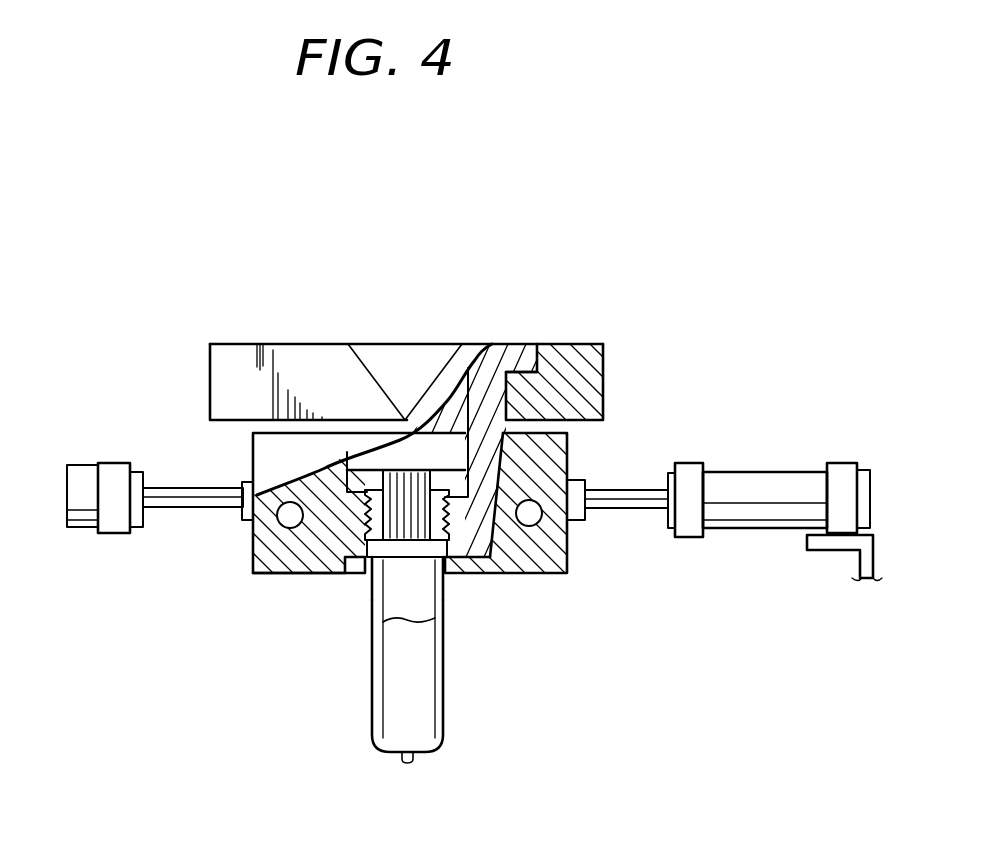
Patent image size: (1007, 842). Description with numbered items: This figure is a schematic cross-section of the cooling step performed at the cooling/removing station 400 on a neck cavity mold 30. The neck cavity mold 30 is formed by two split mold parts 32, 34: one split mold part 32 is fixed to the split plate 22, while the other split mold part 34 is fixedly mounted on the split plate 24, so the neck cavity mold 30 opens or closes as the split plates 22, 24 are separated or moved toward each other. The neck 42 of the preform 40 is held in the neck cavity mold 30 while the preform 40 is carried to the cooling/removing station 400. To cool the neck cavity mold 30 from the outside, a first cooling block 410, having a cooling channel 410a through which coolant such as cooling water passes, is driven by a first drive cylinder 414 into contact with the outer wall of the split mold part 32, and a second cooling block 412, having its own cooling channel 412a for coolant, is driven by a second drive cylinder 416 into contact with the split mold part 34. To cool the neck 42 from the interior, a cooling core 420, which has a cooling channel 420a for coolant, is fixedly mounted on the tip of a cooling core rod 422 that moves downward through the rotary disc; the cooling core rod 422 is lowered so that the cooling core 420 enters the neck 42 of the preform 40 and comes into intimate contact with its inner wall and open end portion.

The cooling/removing station 400 is at (716, 198).
The split plate 22 is at (605, 352).
The split plate 24 is at (220, 380).
The neck cavity mold 30 is at (500, 360).
The split mold part 32 is at (555, 452).
The split mold part 34 is at (318, 471).
The preform 40 is at (425, 705).
The neck 42 is at (478, 548).
The first cooling block 410 is at (548, 573).
The cooling channel 410a is at (532, 505).
The second cooling block 412 is at (253, 560).
The cooling channel 412a is at (285, 573).
The first drive cylinder 414 is at (770, 473).
The second drive cylinder 416 is at (88, 540).
The cooling core 420 is at (444, 592).
The cooling channel 420a is at (370, 583).
The cooling core rod 422 is at (580, 397).